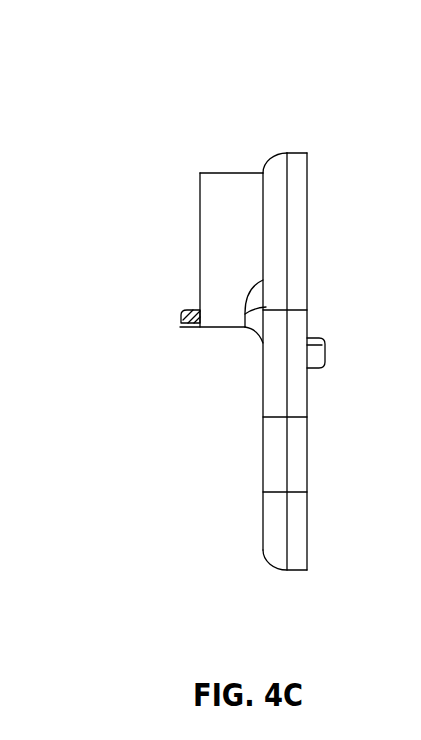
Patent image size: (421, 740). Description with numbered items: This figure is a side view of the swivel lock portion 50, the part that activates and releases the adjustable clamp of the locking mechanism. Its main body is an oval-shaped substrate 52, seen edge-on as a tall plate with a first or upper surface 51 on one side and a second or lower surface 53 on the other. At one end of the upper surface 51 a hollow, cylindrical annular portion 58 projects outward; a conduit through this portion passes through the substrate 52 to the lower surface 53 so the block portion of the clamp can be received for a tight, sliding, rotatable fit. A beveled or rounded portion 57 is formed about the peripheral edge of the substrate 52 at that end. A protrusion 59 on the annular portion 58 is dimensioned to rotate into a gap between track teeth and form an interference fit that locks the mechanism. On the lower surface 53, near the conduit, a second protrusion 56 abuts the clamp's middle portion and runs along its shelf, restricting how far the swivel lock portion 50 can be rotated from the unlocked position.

The swivel lock portion 50 is at (212, 64).
The first or upper surface 51 is at (262, 473).
The substrate 52 is at (306, 222).
The second or lower surface 53 is at (307, 520).
The second protrusion 56 is at (327, 353).
The beveled or rounded portion 57 is at (272, 160).
The annular portion 58 is at (213, 243).
The protrusion 59 is at (192, 330).